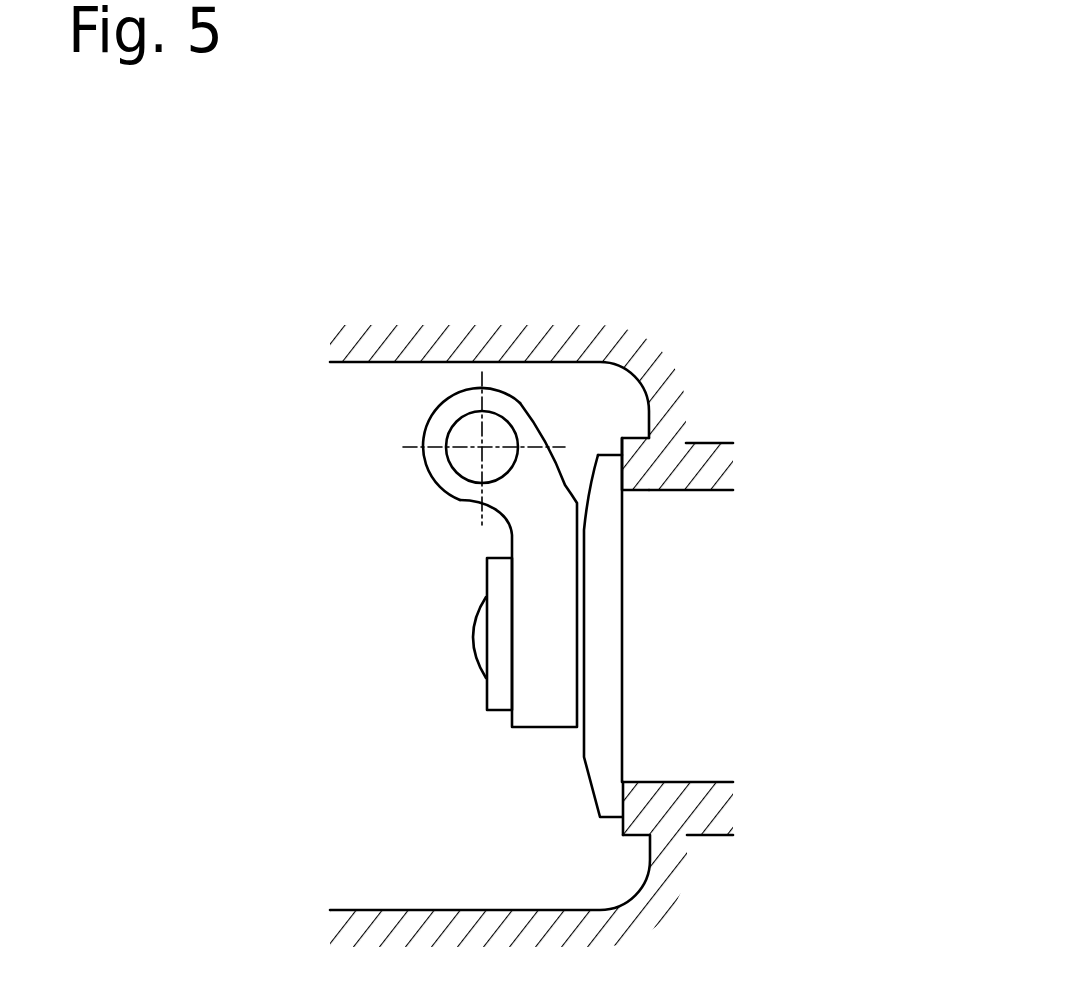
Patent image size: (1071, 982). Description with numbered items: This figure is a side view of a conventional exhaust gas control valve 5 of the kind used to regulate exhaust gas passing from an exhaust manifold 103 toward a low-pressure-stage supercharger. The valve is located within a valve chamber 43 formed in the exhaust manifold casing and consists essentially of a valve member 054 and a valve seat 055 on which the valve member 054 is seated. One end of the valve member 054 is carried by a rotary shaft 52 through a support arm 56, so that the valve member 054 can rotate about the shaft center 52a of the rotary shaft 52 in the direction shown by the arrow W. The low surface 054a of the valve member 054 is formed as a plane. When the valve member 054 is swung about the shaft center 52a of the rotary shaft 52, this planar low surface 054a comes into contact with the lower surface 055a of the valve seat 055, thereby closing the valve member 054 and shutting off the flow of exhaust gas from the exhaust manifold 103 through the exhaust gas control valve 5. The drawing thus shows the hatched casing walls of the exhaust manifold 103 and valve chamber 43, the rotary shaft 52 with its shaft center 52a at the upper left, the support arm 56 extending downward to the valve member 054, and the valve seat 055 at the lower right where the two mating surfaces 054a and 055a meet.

The exhaust gas control valve 5 is at (455, 501).
The rotary shaft 52 is at (501, 414).
The shaft center 52a is at (500, 423).
The support arm 56 is at (540, 673).
The valve chamber 43 is at (385, 687).
The exhaust manifold 103 is at (692, 567).
The valve member 054 is at (595, 755).
The low surface of the valve member 054a is at (632, 461).
The valve seat 055 is at (643, 815).
The lower surface of the valve seat 055a is at (618, 800).